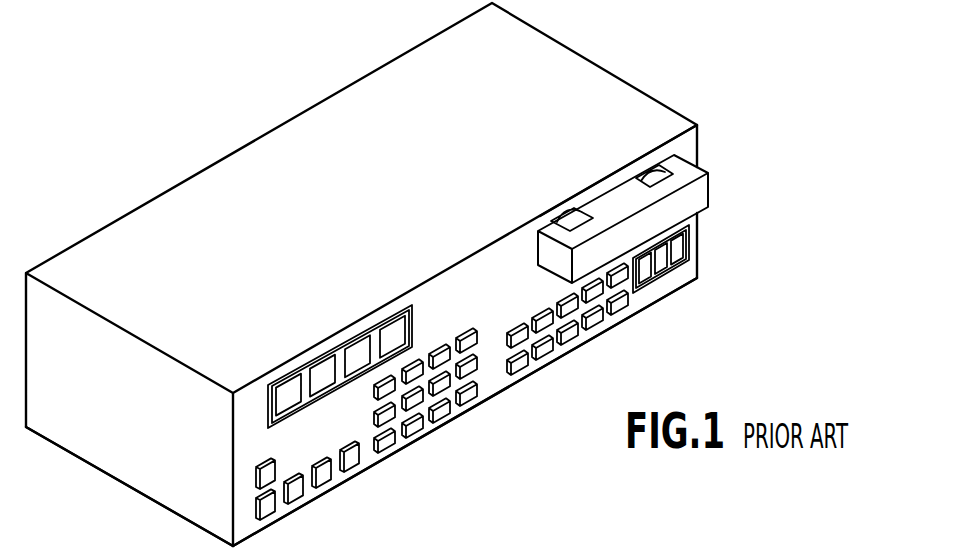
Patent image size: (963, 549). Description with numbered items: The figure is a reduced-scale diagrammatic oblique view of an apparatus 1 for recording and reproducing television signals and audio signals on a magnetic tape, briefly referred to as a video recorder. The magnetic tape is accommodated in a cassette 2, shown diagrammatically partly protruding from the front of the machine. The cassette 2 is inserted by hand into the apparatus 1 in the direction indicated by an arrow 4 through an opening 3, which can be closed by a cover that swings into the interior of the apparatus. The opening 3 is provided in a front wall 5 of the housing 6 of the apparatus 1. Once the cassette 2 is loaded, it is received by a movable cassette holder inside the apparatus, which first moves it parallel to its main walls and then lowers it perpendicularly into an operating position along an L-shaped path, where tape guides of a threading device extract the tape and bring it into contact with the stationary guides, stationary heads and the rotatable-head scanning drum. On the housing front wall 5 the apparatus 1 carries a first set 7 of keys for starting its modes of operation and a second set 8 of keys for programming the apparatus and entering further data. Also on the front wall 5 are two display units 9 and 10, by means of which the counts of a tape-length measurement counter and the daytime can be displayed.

The apparatus 1 is at (623, 62).
The cassette 2 is at (710, 190).
The opening 3 is at (672, 152).
The arrow 4 is at (617, 199).
The front wall 5 is at (650, 304).
The housing 6 is at (99, 473).
The first set of keys 7 is at (560, 357).
The second set of keys 8 is at (428, 438).
The display unit 9 is at (672, 278).
The display unit 10 is at (343, 390).